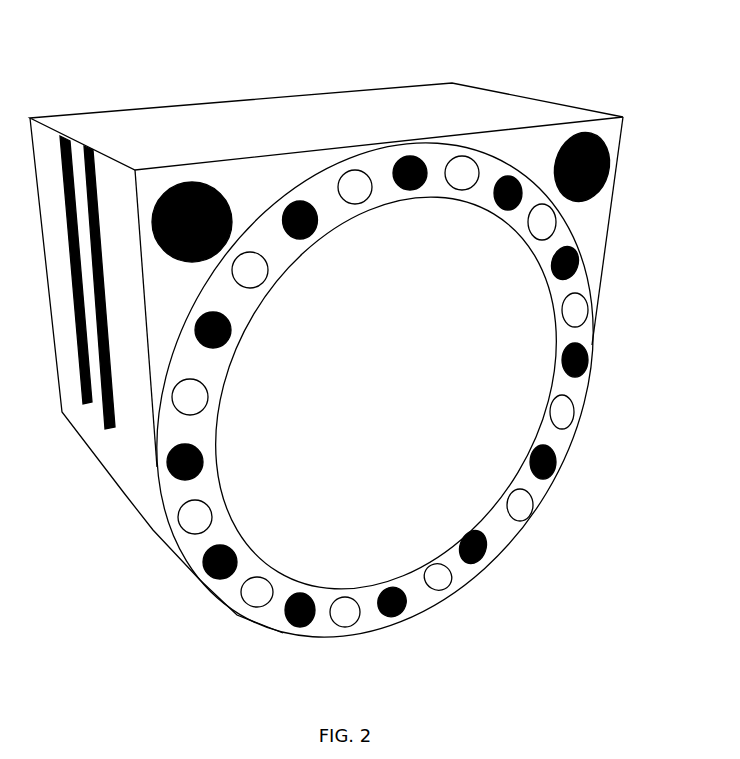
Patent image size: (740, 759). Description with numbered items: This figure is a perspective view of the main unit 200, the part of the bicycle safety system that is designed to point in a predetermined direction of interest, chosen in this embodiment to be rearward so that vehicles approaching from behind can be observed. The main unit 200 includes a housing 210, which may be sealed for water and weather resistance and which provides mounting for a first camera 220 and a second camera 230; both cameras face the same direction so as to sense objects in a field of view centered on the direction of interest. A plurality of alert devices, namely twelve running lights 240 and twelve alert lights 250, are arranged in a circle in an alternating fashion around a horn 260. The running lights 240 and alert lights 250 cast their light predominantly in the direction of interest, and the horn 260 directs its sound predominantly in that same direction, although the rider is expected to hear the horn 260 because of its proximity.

The main unit 200 is at (359, 366).
The housing 210 is at (177, 120).
The first camera 220 is at (227, 188).
The second camera 230 is at (607, 142).
The running lights 240 is at (220, 582).
The alert lights 250 is at (185, 510).
The horn 260 is at (428, 387).